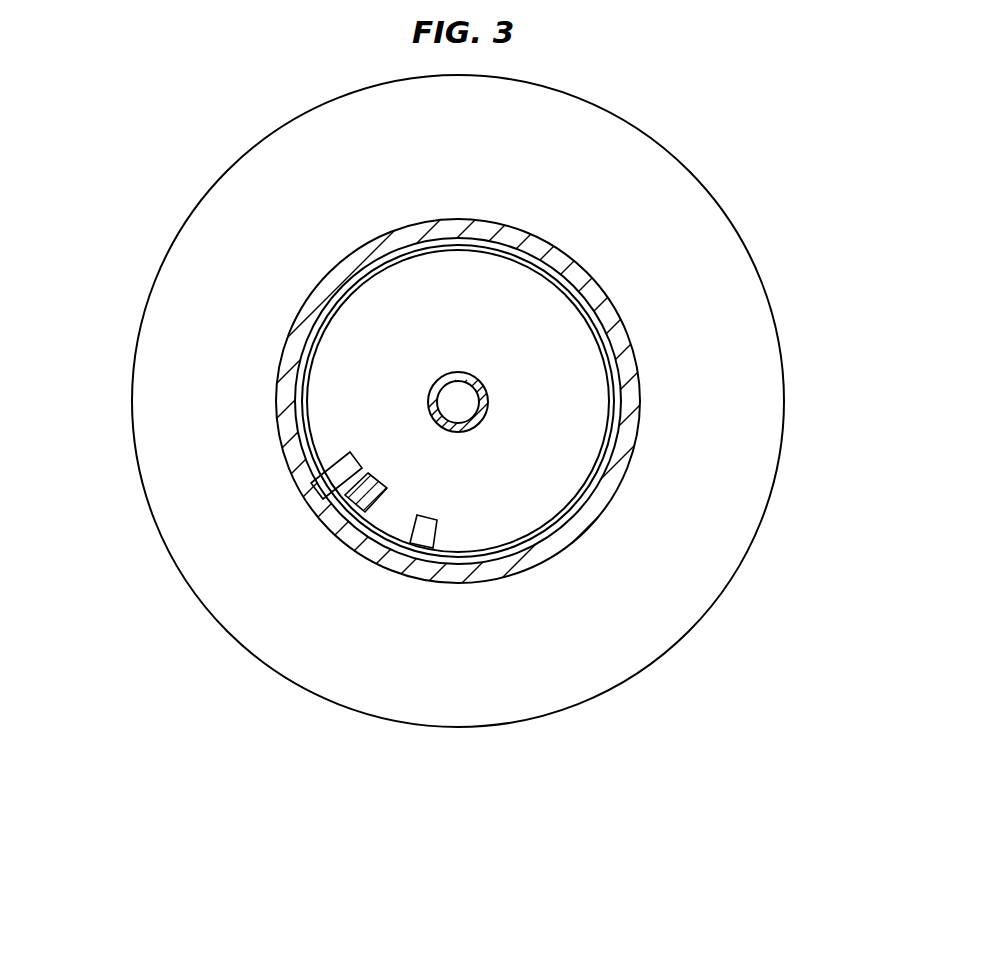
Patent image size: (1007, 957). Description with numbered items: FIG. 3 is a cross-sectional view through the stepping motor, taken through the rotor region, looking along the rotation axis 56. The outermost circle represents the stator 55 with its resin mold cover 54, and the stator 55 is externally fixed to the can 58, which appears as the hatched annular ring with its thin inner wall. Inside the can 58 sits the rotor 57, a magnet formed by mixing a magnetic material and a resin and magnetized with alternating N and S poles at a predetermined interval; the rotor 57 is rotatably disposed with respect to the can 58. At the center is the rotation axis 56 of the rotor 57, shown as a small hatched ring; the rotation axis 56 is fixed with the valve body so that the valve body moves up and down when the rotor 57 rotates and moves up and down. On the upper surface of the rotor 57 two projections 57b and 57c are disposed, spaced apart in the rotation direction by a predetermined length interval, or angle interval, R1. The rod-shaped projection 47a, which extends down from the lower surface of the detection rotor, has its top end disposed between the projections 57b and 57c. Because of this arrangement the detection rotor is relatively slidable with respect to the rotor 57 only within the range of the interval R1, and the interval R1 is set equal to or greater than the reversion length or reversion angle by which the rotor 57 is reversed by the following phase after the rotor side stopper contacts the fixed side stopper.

The stator 55 is at (206, 186).
The resin mold cover 54 is at (300, 318).
The can 58 is at (295, 378).
The rotor 57 is at (446, 345).
The rotation axis 56 is at (490, 400).
The projection 57b is at (340, 472).
The rod-shaped projection 47a is at (347, 497).
The projection 57c is at (425, 540).
The predetermined length interval (angle interval) R1 is at (417, 513).